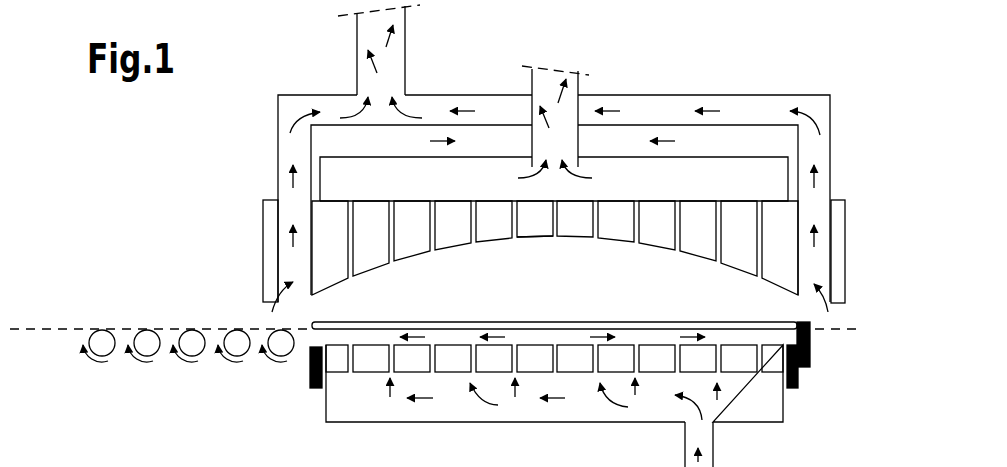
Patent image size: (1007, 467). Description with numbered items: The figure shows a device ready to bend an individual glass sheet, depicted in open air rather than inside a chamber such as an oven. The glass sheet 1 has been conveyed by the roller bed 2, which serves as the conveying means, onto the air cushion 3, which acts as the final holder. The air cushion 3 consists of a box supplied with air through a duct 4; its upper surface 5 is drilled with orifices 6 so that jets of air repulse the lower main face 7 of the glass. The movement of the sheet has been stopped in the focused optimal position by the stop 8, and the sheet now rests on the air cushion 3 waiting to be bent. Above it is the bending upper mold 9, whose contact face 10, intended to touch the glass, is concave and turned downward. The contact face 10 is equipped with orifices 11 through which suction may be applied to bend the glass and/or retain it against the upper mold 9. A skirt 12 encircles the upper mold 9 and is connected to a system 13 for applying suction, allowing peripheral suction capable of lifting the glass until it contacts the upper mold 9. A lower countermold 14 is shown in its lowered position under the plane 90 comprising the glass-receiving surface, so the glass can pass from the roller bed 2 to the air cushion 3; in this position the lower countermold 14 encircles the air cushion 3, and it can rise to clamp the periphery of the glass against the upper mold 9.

The glass sheet 1 is at (352, 323).
The roller bed 2 is at (192, 330).
The air cushion 3 is at (537, 358).
The duct 4 is at (707, 437).
The upper surface 5 is at (527, 310).
The orifices 6 is at (636, 358).
The lower main face 7 is at (577, 333).
The stop 8 is at (811, 337).
The bending upper mold 9 is at (615, 213).
The contact face 10 is at (453, 248).
The orifices 11 is at (637, 240).
The skirt 12 is at (278, 267).
The system for applying suction 13 is at (358, 32).
The lower countermold 14 is at (309, 372).
The plane 90 is at (67, 328).